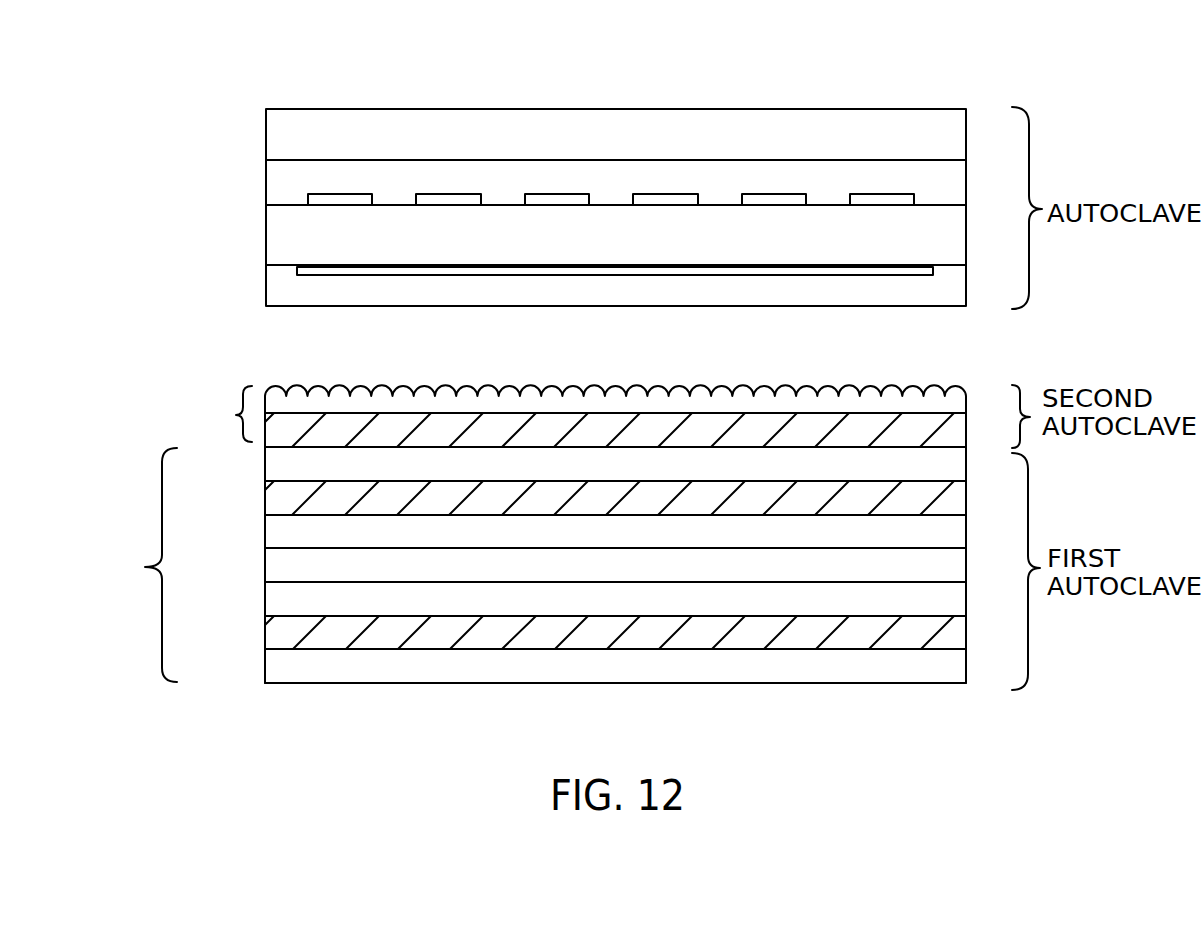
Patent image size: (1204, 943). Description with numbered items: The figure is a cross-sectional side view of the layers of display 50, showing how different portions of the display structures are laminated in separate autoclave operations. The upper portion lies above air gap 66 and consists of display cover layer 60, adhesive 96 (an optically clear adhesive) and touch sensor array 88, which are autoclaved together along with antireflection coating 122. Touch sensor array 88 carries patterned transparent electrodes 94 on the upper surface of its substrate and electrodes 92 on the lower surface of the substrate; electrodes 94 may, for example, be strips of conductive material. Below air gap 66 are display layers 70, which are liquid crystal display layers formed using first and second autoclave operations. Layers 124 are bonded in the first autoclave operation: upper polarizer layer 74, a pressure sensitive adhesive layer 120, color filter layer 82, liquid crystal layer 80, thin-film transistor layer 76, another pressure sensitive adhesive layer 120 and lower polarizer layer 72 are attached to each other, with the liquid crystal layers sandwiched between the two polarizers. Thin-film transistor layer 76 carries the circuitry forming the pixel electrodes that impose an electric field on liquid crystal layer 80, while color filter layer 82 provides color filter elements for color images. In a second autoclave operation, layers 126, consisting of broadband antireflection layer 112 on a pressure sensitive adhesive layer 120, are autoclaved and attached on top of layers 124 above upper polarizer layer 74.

The display 50 is at (836, 68).
The display cover layer 60 is at (266, 135).
The adhesive 96 is at (266, 183).
The touch sensor array 88 is at (266, 234).
The antireflection coating 122 is at (266, 285).
The electrodes 92 is at (513, 268).
The electrodes 94 is at (648, 193).
The air gap 66 is at (962, 346).
The display layers 70 is at (976, 608).
The layers 126 is at (578, 416).
The layers 124 is at (534, 565).
The broadband antireflection layer 112 is at (295, 394).
The pressure sensitive adhesive layer 120 is at (373, 425).
The upper polarizer layer 74 is at (265, 464).
The color filter layer 82 is at (265, 532).
The liquid crystal layer 80 is at (265, 566).
The thin-film transistor layer 76 is at (265, 600).
The polarizer layer 72 is at (265, 667).